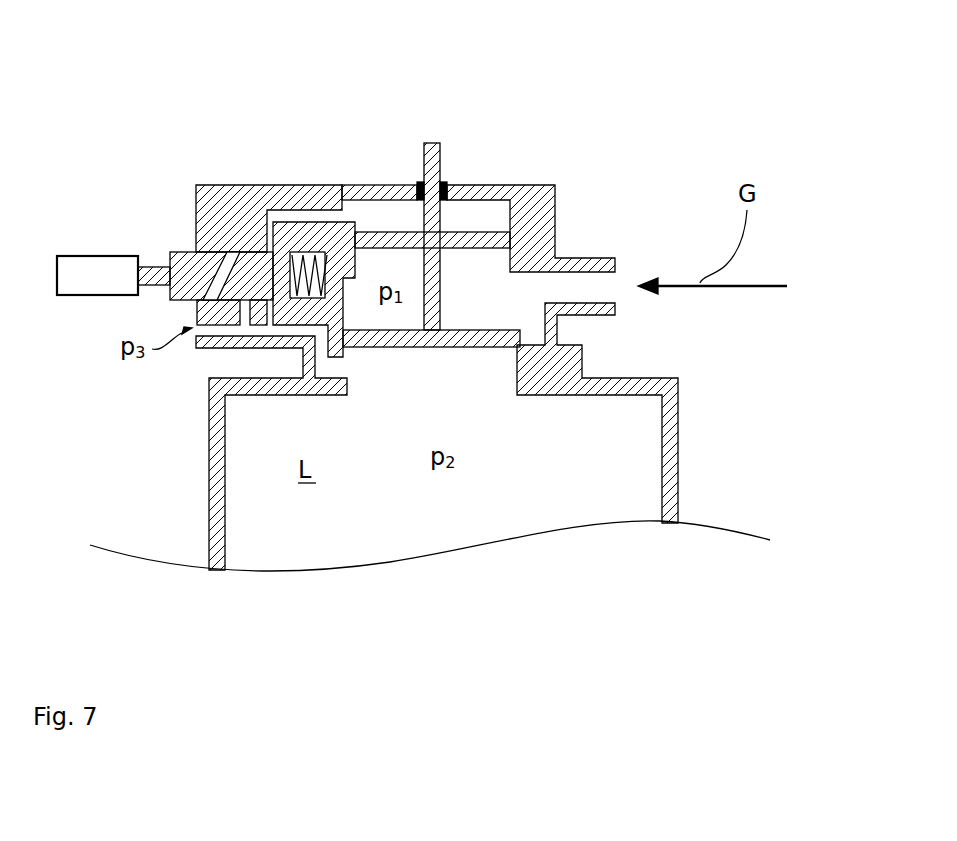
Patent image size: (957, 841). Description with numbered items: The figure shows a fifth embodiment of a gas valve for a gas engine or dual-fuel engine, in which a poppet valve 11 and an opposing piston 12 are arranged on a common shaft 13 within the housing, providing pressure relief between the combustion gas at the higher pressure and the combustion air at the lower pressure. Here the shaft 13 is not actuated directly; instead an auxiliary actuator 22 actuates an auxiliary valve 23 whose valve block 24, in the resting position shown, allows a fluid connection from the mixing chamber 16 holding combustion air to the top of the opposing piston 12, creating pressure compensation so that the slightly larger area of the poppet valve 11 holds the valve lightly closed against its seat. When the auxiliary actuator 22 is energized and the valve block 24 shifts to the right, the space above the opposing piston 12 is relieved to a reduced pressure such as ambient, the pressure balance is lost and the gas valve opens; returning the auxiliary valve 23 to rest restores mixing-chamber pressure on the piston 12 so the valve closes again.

The poppet valve 11 is at (452, 347).
The opposing piston 12 is at (473, 230).
The shaft 13 is at (433, 163).
The mixing chamber 16 is at (225, 505).
The auxiliary actuator 22 is at (100, 275).
The auxiliary valve 23 is at (233, 159).
The valve block 24 is at (248, 267).